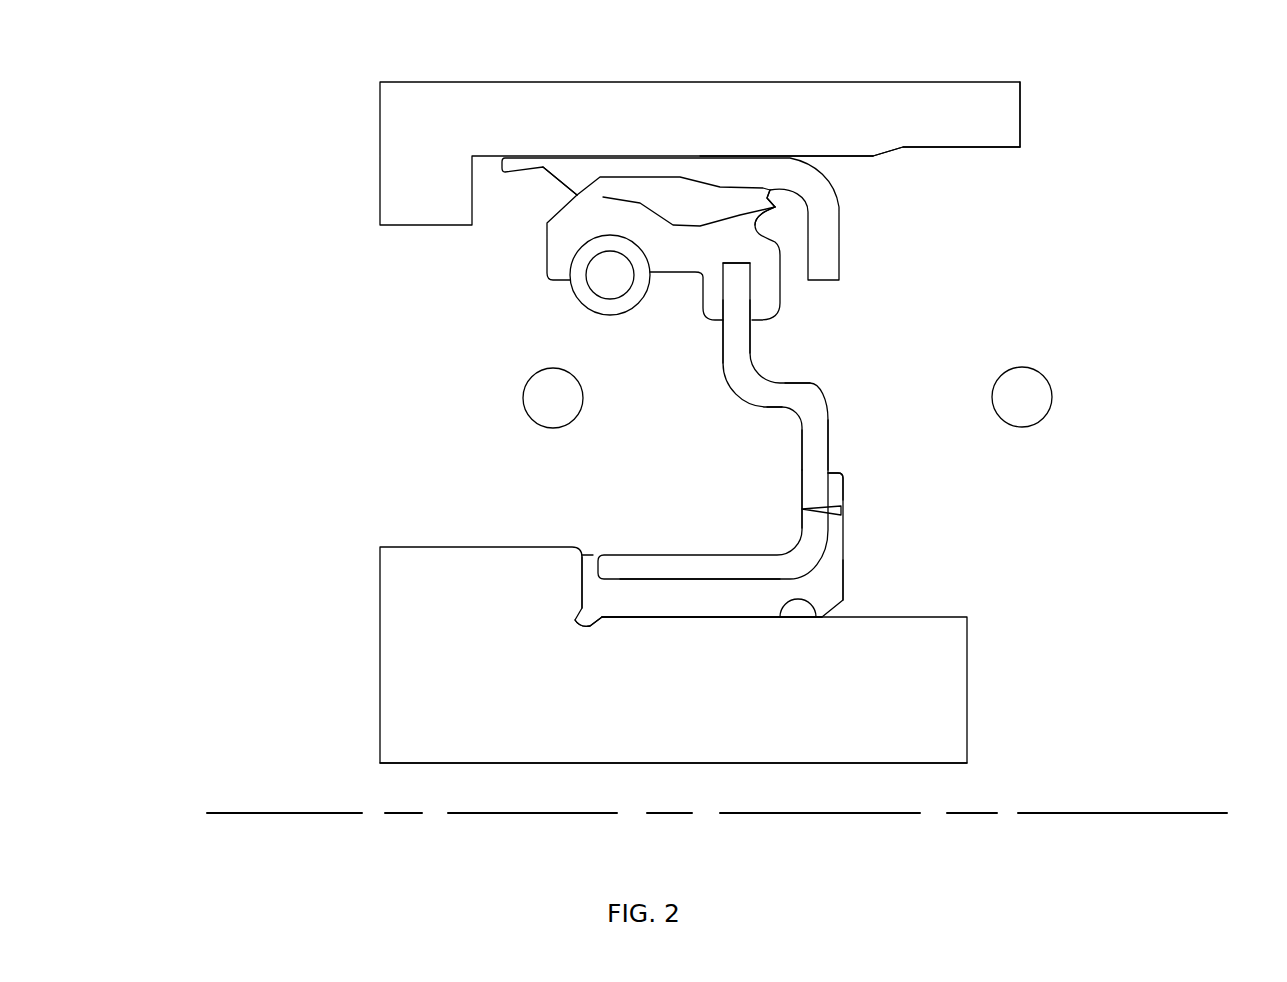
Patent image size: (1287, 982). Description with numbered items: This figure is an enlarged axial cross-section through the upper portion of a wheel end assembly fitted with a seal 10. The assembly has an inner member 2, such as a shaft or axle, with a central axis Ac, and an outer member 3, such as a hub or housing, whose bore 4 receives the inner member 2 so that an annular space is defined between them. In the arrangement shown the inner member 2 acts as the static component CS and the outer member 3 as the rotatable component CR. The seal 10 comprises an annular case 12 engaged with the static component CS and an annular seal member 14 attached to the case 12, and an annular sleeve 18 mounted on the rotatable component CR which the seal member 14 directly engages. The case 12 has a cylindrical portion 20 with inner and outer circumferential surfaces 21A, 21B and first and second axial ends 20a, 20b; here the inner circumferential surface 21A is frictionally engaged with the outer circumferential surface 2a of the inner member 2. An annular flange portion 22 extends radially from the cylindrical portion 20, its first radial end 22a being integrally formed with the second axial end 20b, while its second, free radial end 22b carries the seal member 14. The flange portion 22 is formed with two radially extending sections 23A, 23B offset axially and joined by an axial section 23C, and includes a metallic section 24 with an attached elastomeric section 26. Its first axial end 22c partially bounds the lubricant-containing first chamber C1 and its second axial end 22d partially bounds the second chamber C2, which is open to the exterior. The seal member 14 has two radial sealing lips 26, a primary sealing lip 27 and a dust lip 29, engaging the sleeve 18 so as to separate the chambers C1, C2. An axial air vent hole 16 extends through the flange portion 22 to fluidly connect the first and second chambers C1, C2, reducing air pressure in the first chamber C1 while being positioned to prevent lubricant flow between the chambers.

The inner member 2 is at (372, 664).
The outer circumferential surface of the inner member 2a is at (816, 617).
The outer member 3 is at (903, 88).
The bore 4 is at (947, 150).
The seal 10 is at (993, 275).
The annular case 12 is at (845, 350).
The annular seal member 14 is at (518, 232).
The axial air vent hole 16 is at (863, 509).
The annular sleeve 18 is at (764, 152).
The cylindrical portion 20 is at (768, 645).
The first axial end of the cylindrical portion 20a is at (583, 570).
The second axial end of the cylindrical portion 20b is at (845, 583).
The inner circumferential surface 21A is at (697, 618).
The outer circumferential surface 21B is at (712, 555).
The annular flange portion 22 is at (695, 398).
The first radial end of the flange portion 22a is at (805, 543).
The second free radial end of the flange portion 22b is at (740, 270).
The first axial end of the flange portion 22c is at (723, 363).
The second axial end of the flange portion 22d is at (830, 437).
The first radially extending section 23A is at (813, 458).
The second radially extending section 23B is at (730, 343).
The axial section 23C is at (778, 392).
The metallic section 24 is at (788, 431).
The elastomeric section / radial sealing lip 26 is at (573, 183).
The primary sealing lip 27 is at (603, 195).
The dust lip 29 is at (770, 192).
The rotatable component CR is at (972, 93).
The static component CS is at (400, 723).
The first chamber C1 is at (553, 398).
The second chamber C2 is at (1022, 397).
The central axis Ac is at (1197, 812).